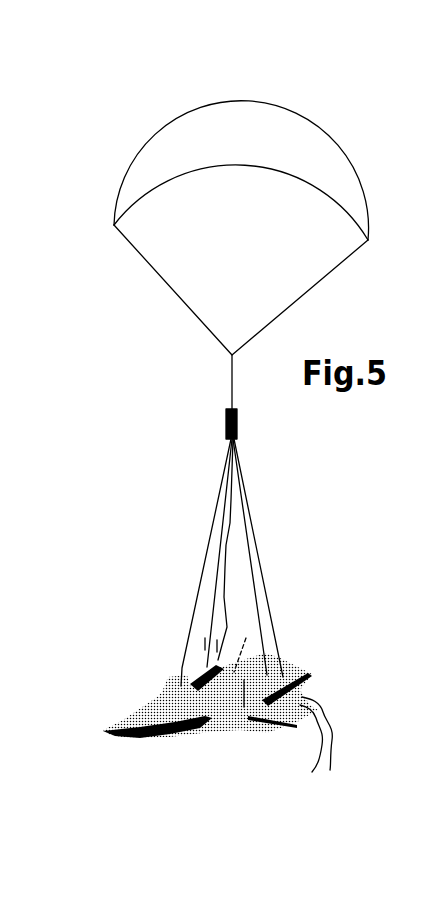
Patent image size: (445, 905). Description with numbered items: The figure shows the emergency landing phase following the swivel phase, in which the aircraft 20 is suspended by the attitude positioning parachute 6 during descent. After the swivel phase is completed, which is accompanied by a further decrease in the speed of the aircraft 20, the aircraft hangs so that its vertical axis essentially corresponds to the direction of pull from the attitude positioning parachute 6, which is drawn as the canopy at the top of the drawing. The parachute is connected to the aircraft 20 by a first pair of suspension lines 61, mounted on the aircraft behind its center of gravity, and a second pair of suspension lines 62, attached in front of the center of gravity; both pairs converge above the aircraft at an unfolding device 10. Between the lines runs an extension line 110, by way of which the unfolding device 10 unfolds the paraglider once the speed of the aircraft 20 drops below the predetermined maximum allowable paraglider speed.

The attitude positioning parachute 6 is at (233, 127).
The unfolding device 10 is at (226, 425).
The aircraft 20 is at (100, 732).
The first pair of suspension lines 61 is at (252, 573).
The second pair of suspension lines 62 is at (211, 632).
The extension line 110 is at (230, 507).